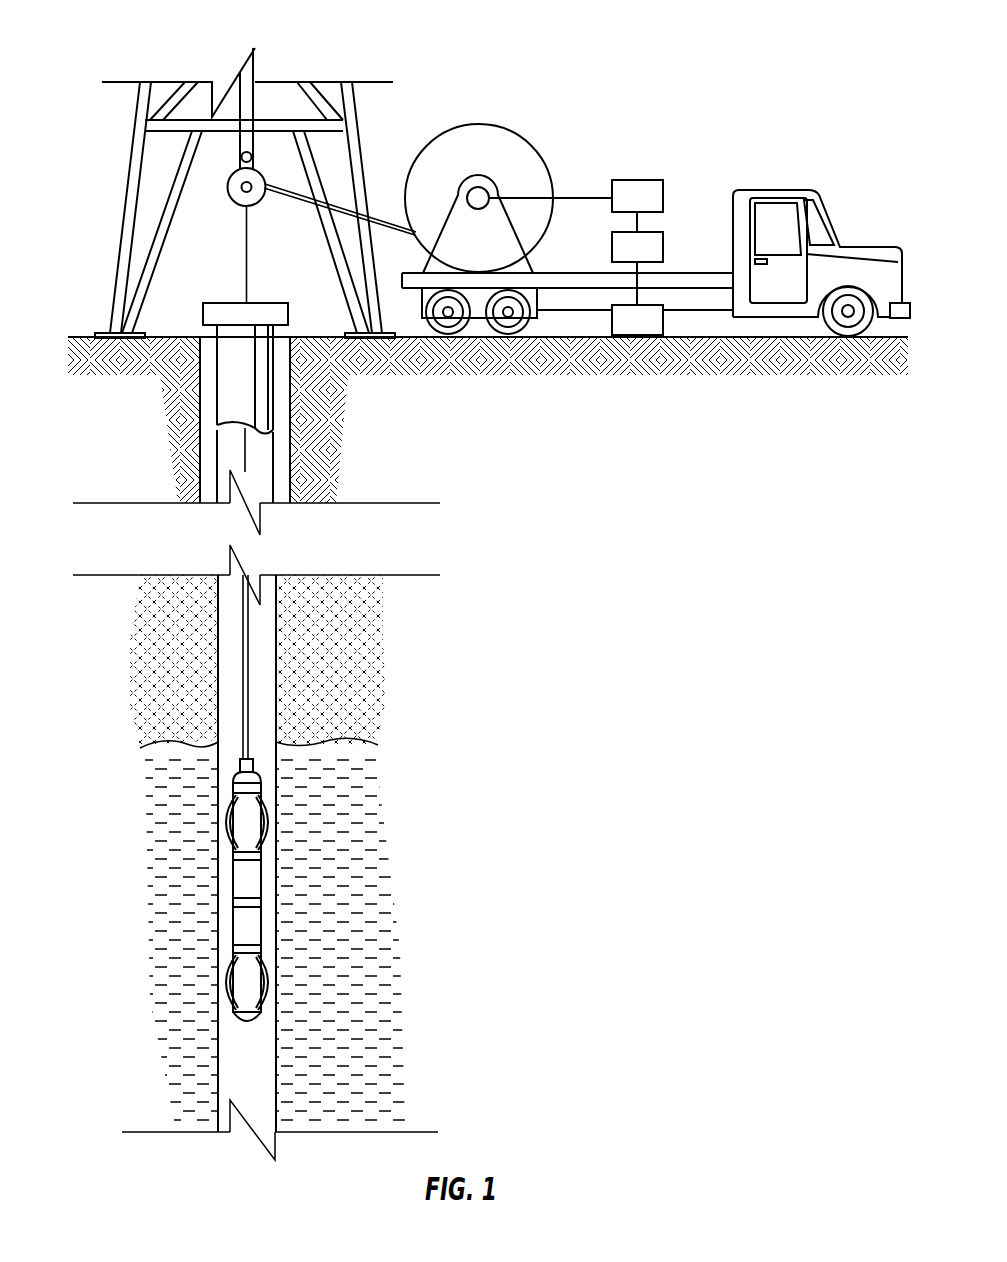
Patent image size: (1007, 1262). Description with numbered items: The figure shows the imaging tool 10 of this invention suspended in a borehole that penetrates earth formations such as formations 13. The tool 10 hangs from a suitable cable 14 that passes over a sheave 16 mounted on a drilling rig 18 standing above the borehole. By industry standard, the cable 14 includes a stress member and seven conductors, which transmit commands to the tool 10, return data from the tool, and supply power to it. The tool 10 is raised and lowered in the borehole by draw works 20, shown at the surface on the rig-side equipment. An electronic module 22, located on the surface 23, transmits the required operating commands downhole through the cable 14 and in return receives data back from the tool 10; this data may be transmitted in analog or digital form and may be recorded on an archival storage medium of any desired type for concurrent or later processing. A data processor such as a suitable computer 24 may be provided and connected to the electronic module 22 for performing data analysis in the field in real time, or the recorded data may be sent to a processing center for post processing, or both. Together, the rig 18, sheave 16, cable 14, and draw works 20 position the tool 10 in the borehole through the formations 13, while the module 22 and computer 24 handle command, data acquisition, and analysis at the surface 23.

The imaging tool 10 is at (266, 880).
The earth formations 13 is at (416, 697).
The cable 14 is at (242, 275).
The sheave 16 is at (227, 187).
The drilling rig 18 is at (136, 133).
The draw works 20 is at (478, 123).
The electronic module 22 is at (650, 180).
The surface 23 is at (83, 337).
The computer 24 is at (650, 232).